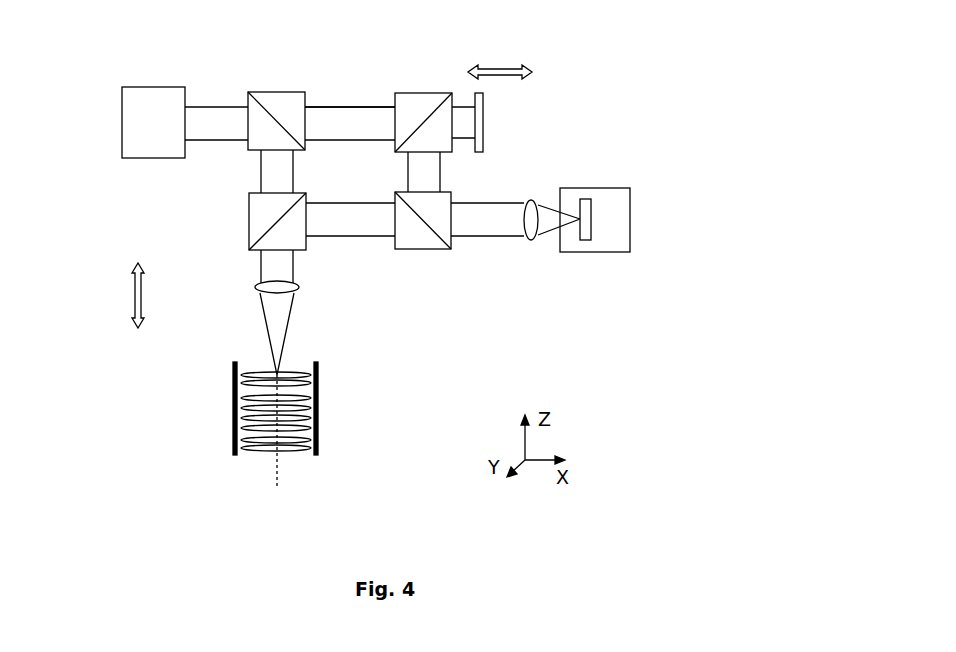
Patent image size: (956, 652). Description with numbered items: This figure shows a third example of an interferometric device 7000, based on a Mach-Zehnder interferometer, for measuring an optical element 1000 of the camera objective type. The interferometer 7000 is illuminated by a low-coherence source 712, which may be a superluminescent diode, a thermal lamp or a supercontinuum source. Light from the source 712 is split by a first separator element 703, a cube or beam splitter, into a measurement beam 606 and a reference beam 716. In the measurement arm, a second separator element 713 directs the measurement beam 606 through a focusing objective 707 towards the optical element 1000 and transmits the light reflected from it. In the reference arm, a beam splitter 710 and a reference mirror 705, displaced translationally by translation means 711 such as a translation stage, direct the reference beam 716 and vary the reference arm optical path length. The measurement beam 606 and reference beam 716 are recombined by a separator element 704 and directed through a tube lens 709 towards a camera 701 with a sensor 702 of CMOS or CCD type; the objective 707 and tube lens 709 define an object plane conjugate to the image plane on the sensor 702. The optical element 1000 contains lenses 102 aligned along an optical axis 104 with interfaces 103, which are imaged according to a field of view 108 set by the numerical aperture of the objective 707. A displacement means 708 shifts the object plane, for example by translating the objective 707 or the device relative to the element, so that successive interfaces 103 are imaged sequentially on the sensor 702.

The interferometric device 7000 is at (695, 142).
The low-coherence source 712 is at (122, 120).
The first separator element 703 is at (273, 90).
The reference beam 716 is at (383, 100).
The beam splitter 710 is at (420, 92).
The reference mirror 705 is at (485, 122).
The translation means 711 is at (498, 65).
The second separator element 713 is at (249, 222).
The separator element 704 is at (422, 252).
The tube lens 709 is at (532, 248).
The camera 701 is at (632, 218).
The sensor 702 is at (585, 252).
The focusing objective 707 is at (255, 283).
The measurement beam 606 is at (288, 318).
The displacement means 708 is at (130, 305).
The optical element 1000 is at (279, 429).
The interfaces 103 is at (232, 432).
The field of view 108 is at (318, 385).
The lenses 102 is at (318, 444).
The optical axis 104 is at (277, 478).